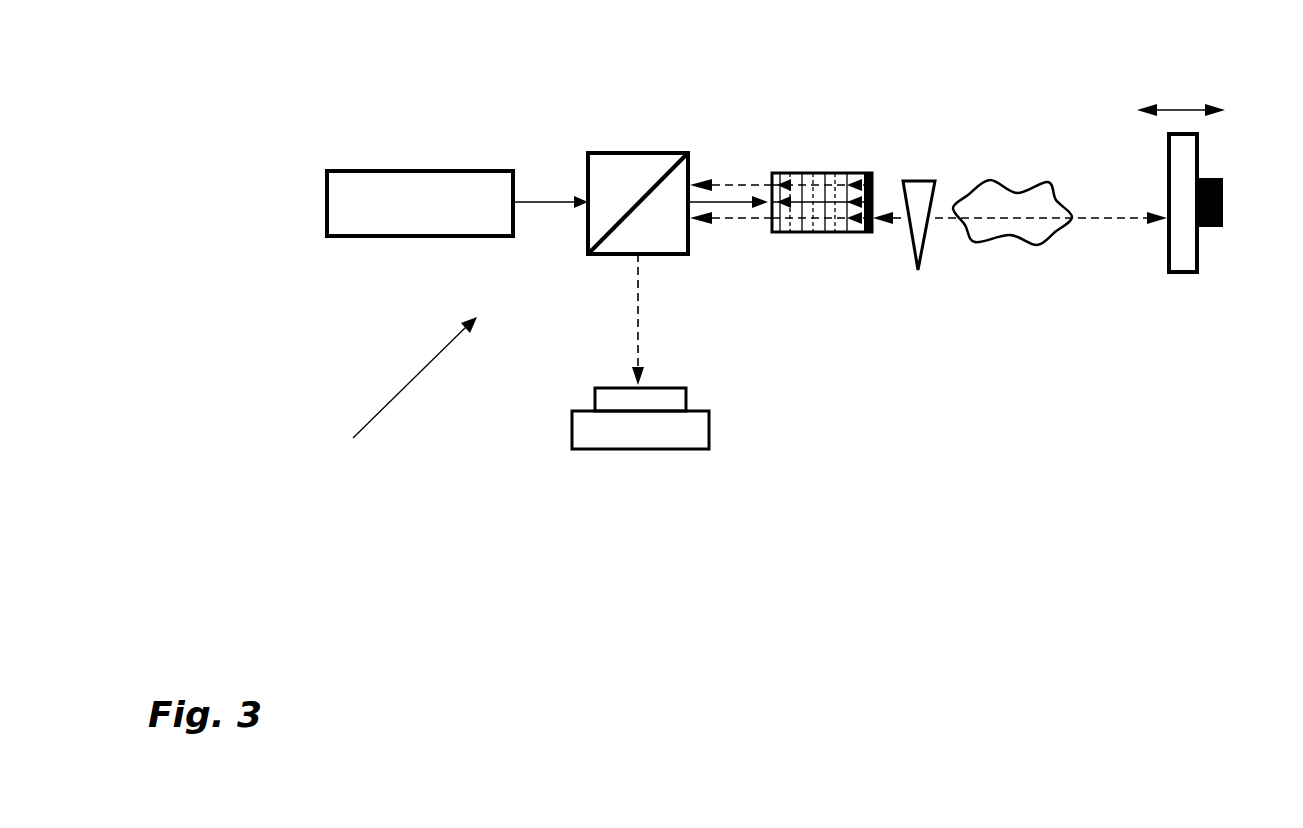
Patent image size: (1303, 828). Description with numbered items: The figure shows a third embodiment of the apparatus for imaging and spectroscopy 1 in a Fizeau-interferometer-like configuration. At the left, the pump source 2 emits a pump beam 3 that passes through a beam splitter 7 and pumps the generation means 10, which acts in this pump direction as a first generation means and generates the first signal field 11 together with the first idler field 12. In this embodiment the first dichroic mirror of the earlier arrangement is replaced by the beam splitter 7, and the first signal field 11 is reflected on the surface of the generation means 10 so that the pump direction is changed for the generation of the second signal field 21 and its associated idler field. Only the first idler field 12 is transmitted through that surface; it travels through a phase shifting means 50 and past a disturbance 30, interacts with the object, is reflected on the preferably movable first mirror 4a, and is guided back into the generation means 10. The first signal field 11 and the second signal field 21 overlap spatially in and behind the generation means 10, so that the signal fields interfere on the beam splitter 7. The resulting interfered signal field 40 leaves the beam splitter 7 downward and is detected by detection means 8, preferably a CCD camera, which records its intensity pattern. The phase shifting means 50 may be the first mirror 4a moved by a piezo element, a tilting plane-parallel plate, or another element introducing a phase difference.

The apparatus for imaging and spectroscopy 1 is at (398, 403).
The pump source 2 is at (353, 195).
The pump beam 3 is at (551, 200).
The beam splitter 7 is at (630, 168).
The detector 8 is at (672, 435).
The generation means 10 is at (823, 180).
The first signal field 11 is at (743, 183).
The second signal field 21 is at (731, 218).
The first idler field 12 is at (1102, 217).
The disturbance / turbulent medium 30 is at (1032, 232).
The interfered signal field 40 is at (637, 310).
The first mirror 4a is at (1186, 260).
The phase shifting means 50 is at (920, 237).